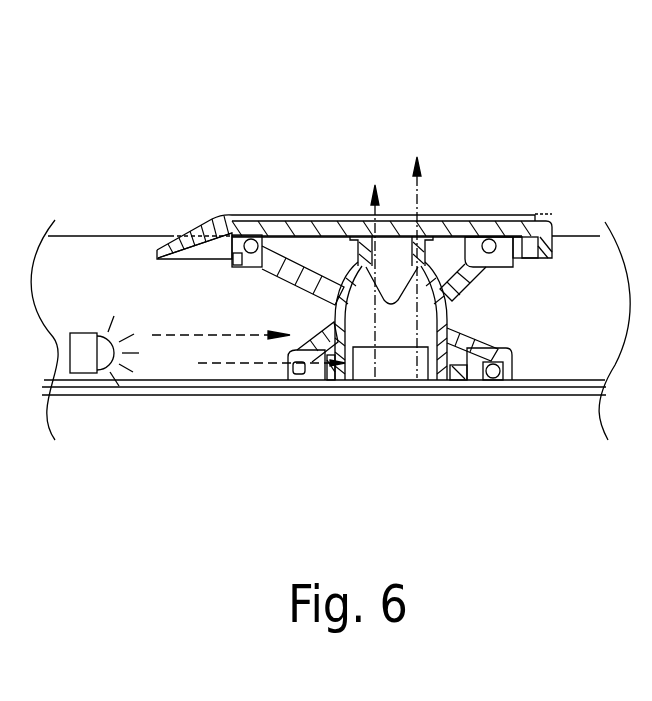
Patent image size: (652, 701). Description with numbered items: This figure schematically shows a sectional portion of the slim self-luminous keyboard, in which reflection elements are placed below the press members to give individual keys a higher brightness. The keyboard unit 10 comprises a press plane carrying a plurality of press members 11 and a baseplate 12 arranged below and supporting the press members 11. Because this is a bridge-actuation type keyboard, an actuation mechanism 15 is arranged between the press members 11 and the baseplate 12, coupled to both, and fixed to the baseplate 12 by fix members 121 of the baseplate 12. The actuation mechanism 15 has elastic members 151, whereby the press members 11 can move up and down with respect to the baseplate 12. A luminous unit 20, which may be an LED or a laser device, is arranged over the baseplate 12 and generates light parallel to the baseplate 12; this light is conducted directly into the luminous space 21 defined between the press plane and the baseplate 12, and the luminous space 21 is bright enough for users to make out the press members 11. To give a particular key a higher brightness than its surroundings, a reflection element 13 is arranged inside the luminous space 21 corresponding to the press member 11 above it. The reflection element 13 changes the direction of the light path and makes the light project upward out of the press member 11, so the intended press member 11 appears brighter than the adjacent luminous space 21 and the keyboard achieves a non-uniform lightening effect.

The keyboard unit 10 is at (553, 83).
The press member 11 is at (457, 216).
The baseplate 12 is at (527, 393).
The fix member 121 is at (316, 378).
The reflection element 13 is at (395, 368).
The actuation mechanism 15 is at (268, 217).
The elastic member 151 is at (319, 252).
The luminous unit 20 is at (85, 358).
The luminous space 21 is at (572, 386).